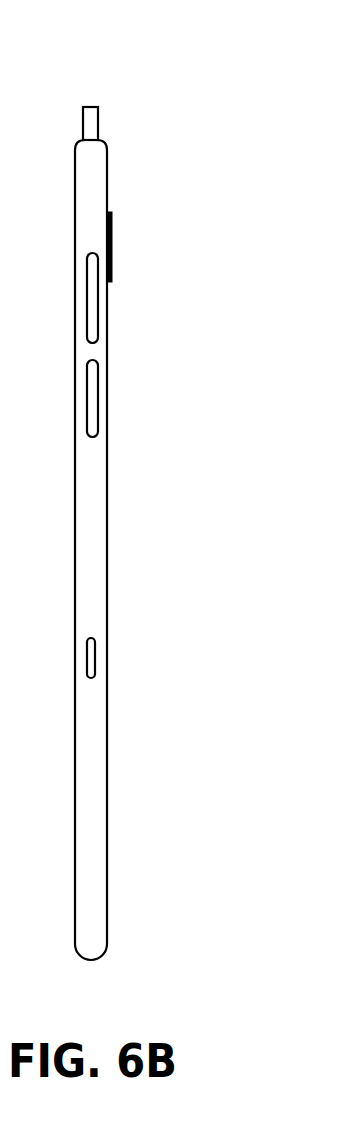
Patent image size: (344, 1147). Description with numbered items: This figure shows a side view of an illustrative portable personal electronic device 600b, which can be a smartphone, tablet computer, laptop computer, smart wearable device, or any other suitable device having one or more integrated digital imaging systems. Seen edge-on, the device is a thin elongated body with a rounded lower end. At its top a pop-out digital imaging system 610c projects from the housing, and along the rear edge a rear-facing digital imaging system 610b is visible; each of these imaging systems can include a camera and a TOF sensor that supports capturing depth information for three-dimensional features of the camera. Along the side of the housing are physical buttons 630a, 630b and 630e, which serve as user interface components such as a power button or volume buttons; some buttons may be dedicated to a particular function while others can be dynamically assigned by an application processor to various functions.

The portable personal electronic device 600b is at (92, 71).
The pop-out digital imaging system 610c is at (98, 119).
The rear-facing digital imaging system 610b is at (112, 247).
The physical button 630a is at (98, 310).
The physical button 630b is at (98, 400).
The physical button 630e is at (95, 663).